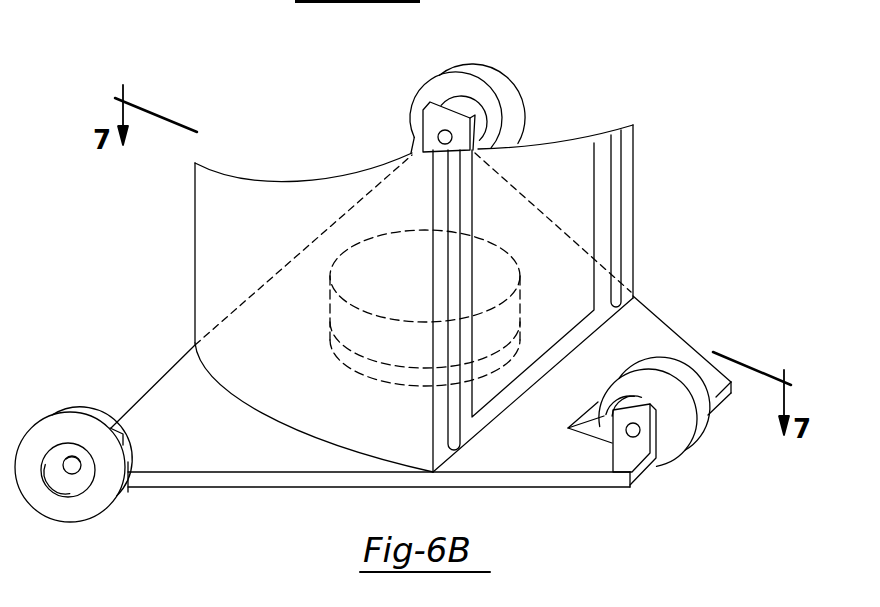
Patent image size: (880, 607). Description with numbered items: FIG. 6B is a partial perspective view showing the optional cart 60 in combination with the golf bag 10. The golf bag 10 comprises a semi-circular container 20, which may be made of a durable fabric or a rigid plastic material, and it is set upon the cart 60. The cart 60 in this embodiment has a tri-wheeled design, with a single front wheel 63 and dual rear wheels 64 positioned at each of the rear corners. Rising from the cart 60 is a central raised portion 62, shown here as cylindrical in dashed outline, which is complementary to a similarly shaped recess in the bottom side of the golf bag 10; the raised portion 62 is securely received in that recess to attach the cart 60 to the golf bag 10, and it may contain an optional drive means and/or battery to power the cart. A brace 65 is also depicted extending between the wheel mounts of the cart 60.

The golf bag 10 is at (181, 213).
The semi-circular container 20 is at (203, 277).
The cart 60 is at (118, 369).
The central raised portion 62 is at (397, 243).
The front wheel 63 is at (659, 368).
The rear wheels 64 is at (463, 67).
The brace 65 is at (190, 400).